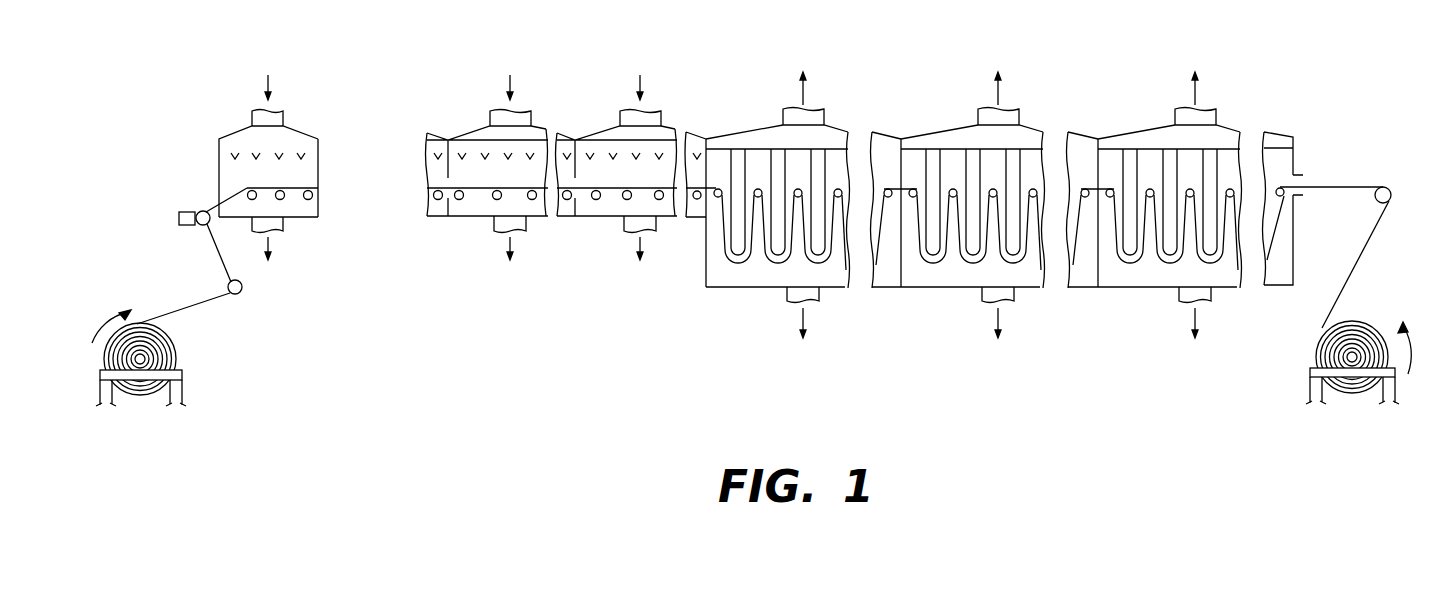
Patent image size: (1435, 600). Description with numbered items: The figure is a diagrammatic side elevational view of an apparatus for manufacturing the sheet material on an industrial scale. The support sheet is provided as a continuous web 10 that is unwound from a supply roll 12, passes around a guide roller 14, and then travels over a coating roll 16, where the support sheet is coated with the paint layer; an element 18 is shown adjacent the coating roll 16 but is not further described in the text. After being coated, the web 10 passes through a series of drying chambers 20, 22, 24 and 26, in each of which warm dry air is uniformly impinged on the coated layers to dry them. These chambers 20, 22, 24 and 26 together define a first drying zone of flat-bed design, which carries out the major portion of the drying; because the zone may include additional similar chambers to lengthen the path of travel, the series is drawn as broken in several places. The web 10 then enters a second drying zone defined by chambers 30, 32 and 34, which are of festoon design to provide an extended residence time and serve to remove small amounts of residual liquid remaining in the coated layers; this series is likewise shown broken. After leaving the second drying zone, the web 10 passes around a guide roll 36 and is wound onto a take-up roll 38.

The continuous web 10 is at (190, 307).
The supply roll 12 is at (165, 353).
The guide roller 14 is at (243, 288).
The coating roll 16 is at (200, 212).
The coating applicator 18 is at (179, 218).
The drying chamber 20 is at (244, 148).
The drying chamber 22 is at (863, 234).
The drying chamber 24 is at (473, 148).
The drying chamber 26 is at (606, 148).
The drying chamber 30 is at (740, 148).
The drying chamber 32 is at (935, 148).
The drying chamber 34 is at (1132, 148).
The guide roll 36 is at (1385, 190).
The take-up roll 38 is at (1372, 340).